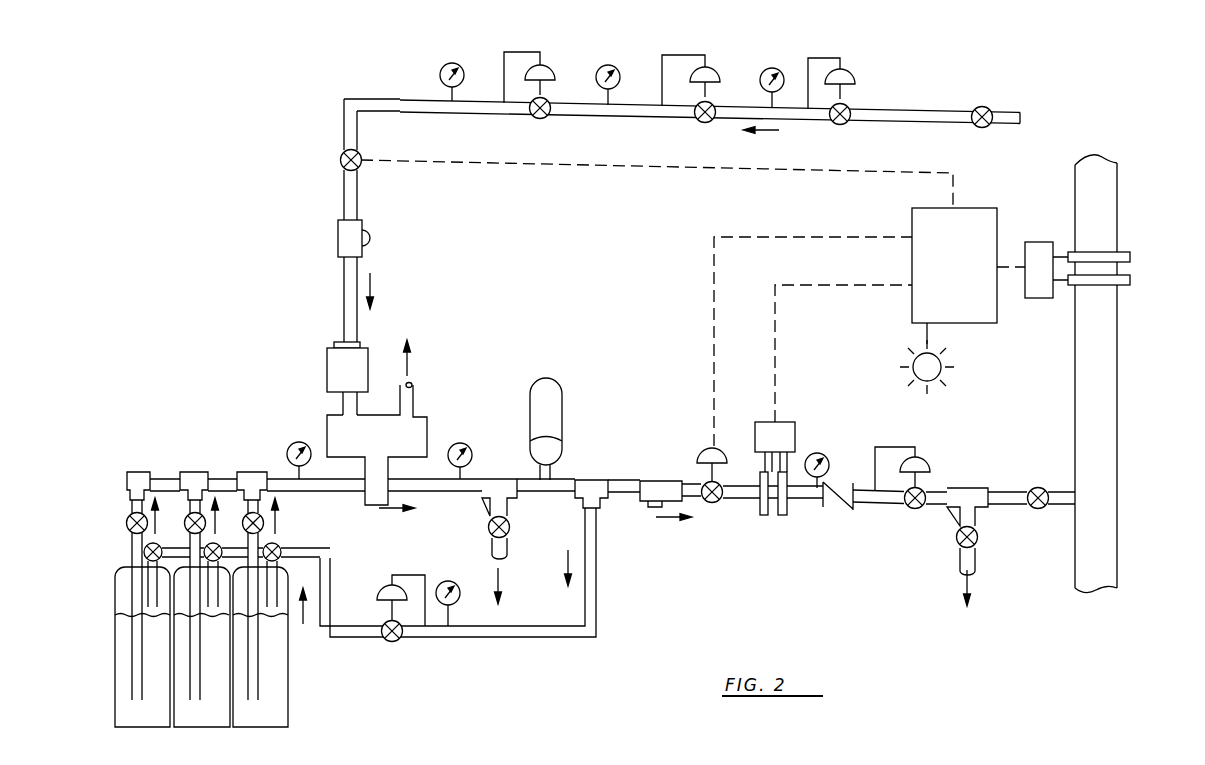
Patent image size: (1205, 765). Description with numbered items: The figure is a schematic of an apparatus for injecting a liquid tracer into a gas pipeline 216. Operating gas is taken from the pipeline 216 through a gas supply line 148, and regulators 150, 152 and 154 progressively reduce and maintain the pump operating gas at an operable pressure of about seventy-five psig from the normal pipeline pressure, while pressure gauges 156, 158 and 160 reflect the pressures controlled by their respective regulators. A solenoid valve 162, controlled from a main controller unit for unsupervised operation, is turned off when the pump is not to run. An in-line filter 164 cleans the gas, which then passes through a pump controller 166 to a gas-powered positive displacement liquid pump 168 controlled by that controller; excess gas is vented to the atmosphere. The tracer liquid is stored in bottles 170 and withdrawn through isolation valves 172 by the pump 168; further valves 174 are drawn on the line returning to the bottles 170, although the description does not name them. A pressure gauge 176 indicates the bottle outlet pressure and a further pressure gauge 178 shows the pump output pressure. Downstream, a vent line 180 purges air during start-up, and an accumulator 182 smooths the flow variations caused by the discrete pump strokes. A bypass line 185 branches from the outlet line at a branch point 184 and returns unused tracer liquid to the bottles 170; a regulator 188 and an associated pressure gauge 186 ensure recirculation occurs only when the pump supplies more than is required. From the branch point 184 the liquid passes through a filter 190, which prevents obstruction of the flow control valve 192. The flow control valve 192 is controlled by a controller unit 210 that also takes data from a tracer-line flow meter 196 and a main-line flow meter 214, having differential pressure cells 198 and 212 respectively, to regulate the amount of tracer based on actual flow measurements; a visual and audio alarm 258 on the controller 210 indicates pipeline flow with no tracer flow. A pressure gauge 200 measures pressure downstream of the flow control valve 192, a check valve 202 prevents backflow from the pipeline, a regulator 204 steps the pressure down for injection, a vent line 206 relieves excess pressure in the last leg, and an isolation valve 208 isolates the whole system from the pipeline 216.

The gas supply line 148 is at (1015, 112).
The regulator 150 is at (853, 78).
The regulator 152 is at (715, 70).
The regulator 154 is at (548, 68).
The pressure gauge 156 is at (766, 68).
The pressure gauge 158 is at (613, 65).
The pressure gauge 160 is at (452, 62).
The solenoid valve 162 is at (340, 160).
The in-line filter 164 is at (368, 232).
The pump controller 166 is at (327, 348).
The gas-powered liquid pump 168 is at (427, 415).
The bottles 170 is at (115, 655).
The isolation valves 172 is at (126, 523).
The vent valves 174 is at (144, 552).
The pressure gauge 176 is at (288, 448).
The pressure gauge 178 is at (468, 444).
The vent line 180 is at (510, 527).
The accumulator 182 is at (562, 410).
The branch point 184 is at (600, 480).
The bypass line 185 is at (597, 597).
The pressure gauge 186 is at (445, 581).
The regulator 188 is at (385, 588).
The filter 190 is at (657, 507).
The flow control valve 192 is at (700, 458).
The flow meter 196 is at (785, 515).
The differential pressure cell 198 is at (785, 422).
The pressure gauge 200 is at (822, 453).
The check valve 202 is at (848, 508).
The regulator 204 is at (930, 463).
The vent line 206 is at (978, 538).
The isolation valve 208 is at (1032, 488).
The controller unit 210 is at (915, 208).
The differential pressure cell 212 is at (1038, 242).
The flow meter 214 is at (1130, 257).
The pipeline 216 is at (1117, 472).
The visual and audio alarm 258 is at (912, 366).